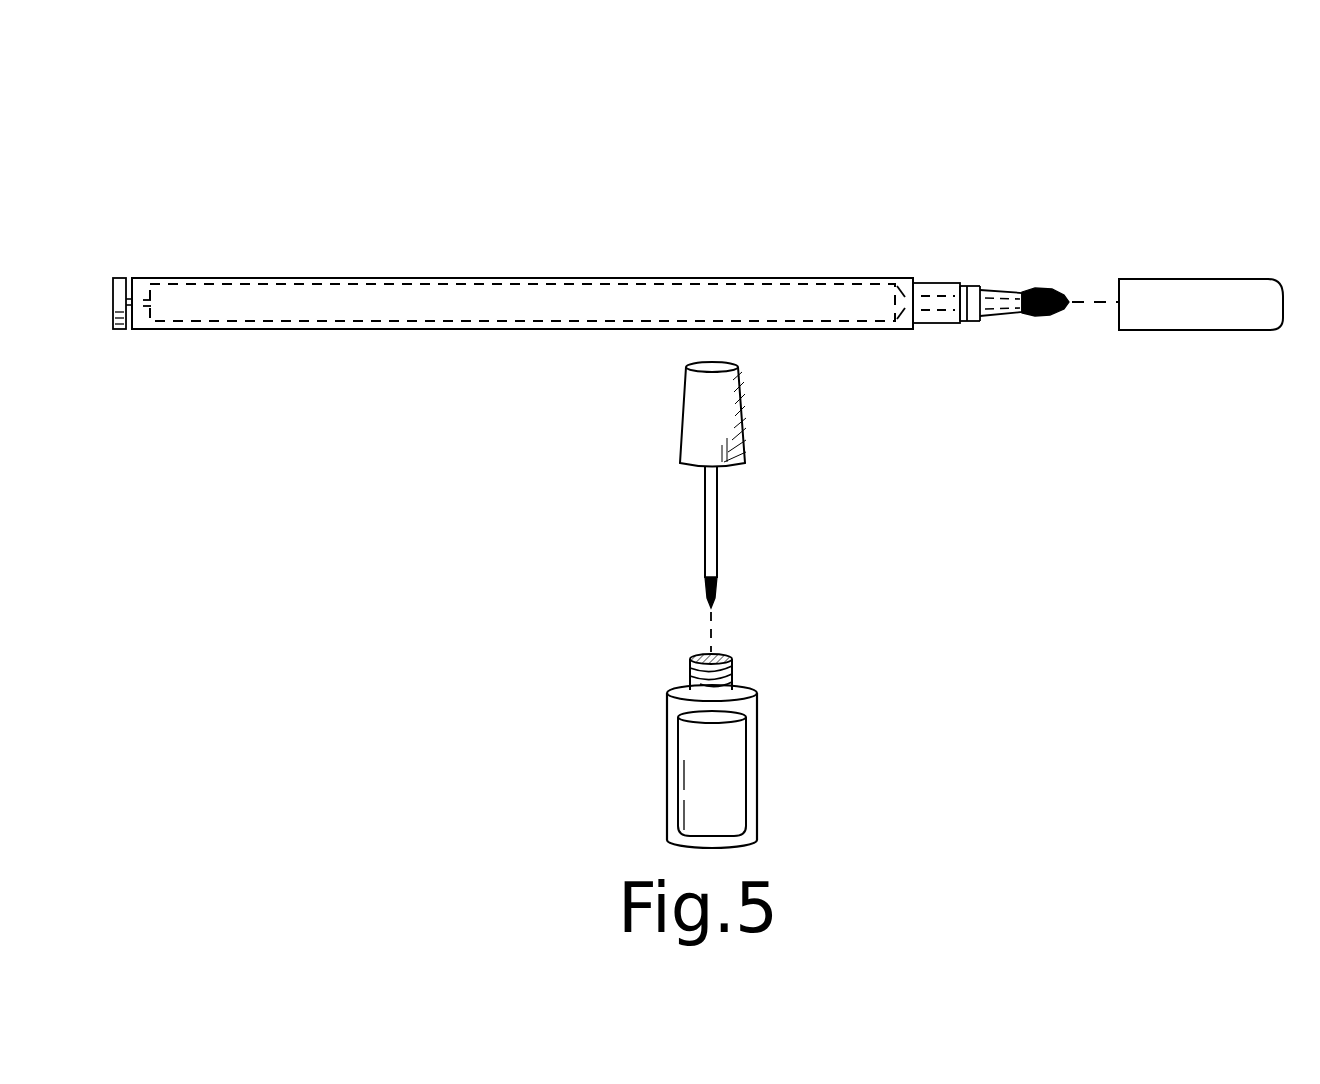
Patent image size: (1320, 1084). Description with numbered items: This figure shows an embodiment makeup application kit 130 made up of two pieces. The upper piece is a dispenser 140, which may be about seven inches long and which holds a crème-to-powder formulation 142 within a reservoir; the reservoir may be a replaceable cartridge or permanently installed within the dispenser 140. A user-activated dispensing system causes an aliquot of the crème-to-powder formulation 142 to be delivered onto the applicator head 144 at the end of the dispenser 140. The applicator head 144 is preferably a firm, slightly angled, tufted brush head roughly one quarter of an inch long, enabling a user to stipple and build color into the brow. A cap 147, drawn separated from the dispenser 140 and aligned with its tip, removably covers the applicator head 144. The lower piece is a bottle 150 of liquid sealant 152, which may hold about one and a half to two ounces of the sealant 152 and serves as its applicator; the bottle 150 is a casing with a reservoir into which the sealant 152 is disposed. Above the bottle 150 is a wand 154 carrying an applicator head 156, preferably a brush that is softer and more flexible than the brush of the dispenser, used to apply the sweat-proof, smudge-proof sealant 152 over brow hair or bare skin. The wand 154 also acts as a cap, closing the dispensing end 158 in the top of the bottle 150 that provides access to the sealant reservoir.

The kit 130 is at (652, 210).
The dispenser 140 is at (420, 250).
The crème-to-powder formulation 142 is at (290, 302).
The applicator head 144 is at (1048, 292).
The cap 147 is at (1210, 297).
The bottle 150 is at (757, 708).
The liquid sealant 152 is at (700, 760).
The wand 154 is at (711, 400).
The applicator head (brush) 156 is at (695, 587).
The dispensing end 158 is at (735, 641).